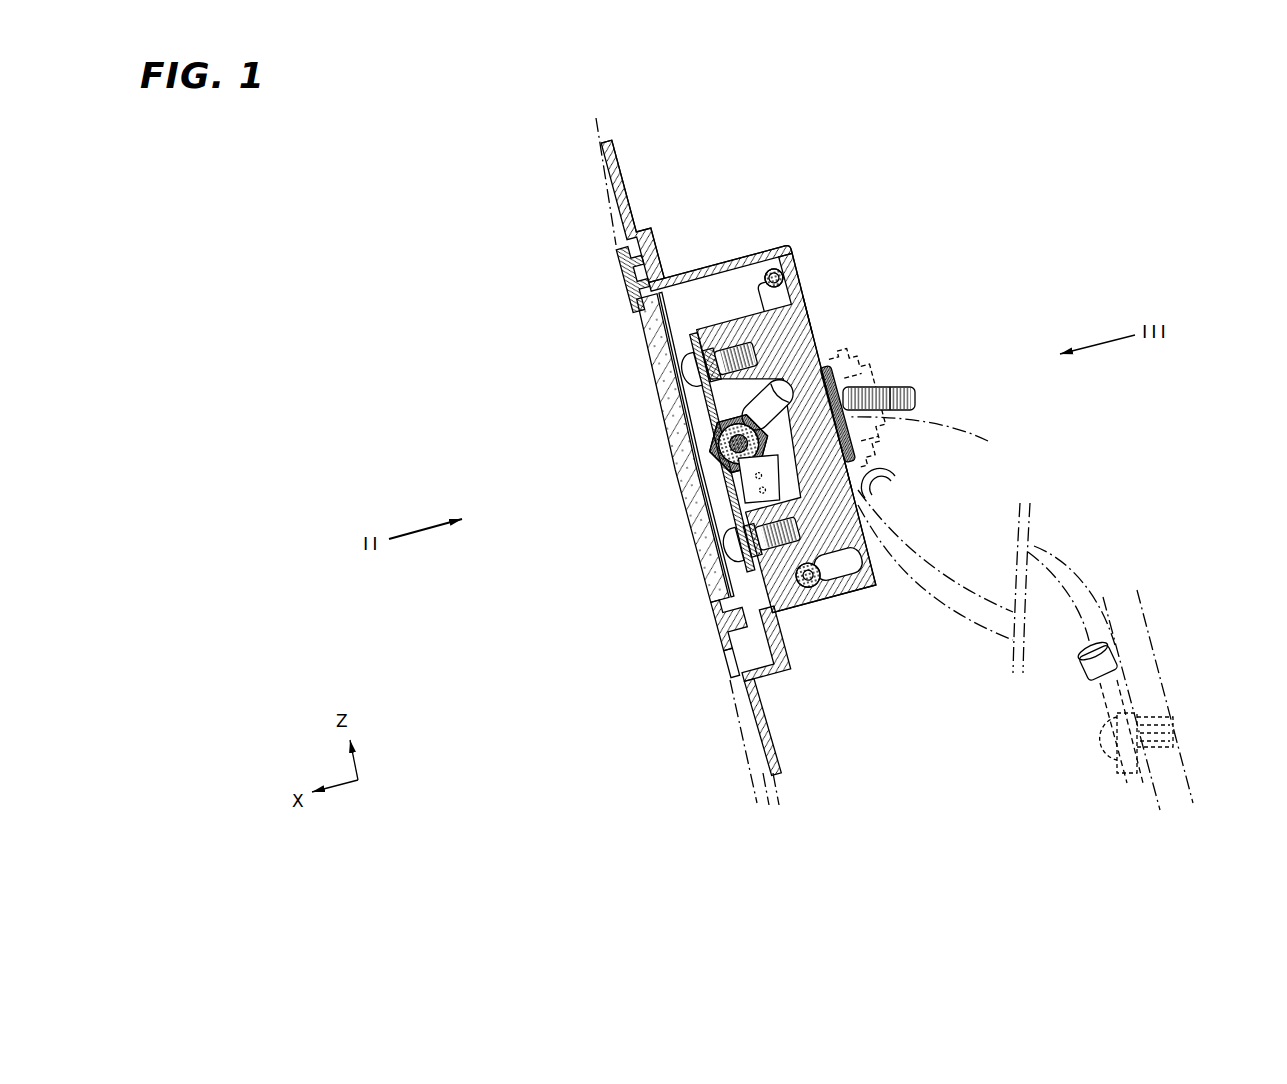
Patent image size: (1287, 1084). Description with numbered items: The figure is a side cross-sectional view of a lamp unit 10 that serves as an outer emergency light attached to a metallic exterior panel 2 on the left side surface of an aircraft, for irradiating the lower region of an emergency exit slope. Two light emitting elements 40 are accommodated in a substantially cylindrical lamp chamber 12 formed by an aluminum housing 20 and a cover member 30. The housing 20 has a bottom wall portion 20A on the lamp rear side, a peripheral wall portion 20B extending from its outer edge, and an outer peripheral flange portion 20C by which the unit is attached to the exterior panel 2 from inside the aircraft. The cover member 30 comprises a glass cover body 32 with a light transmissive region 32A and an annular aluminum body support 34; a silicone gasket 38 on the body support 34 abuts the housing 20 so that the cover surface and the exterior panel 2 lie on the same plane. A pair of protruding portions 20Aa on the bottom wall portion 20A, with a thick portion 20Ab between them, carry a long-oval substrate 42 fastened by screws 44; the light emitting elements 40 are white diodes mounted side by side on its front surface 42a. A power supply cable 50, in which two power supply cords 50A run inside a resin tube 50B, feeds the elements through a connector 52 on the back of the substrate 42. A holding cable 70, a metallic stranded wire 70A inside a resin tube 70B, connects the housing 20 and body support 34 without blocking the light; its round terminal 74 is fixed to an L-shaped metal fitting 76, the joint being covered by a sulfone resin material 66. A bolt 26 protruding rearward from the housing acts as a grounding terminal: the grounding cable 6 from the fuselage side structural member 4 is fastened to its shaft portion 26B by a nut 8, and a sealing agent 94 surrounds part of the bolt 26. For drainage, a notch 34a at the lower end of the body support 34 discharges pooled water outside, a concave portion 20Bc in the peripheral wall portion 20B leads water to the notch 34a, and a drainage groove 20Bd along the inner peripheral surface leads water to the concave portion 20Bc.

The exterior panel 2 is at (743, 737).
The fuselage side structural member 4 is at (1150, 624).
The grounding cable 6 is at (1068, 574).
The nut 8 is at (925, 435).
The lamp unit 10 is at (478, 309).
The lamp chamber 12 is at (728, 310).
The housing 20 is at (793, 242).
The bottom wall portion 20A is at (858, 550).
The protruding portions 20Aa is at (812, 320).
The thick portion 20Ab is at (851, 437).
The peripheral wall portion 20B is at (740, 262).
The concave portion 20Bc is at (767, 637).
The drainage groove 20Bd is at (771, 680).
The outer peripheral flange portion 20C is at (625, 186).
The bolt 26 is at (920, 398).
The shaft portion 26B is at (902, 385).
The cover member 30 is at (578, 587).
The cover body 32 is at (689, 551).
The light transmissive region 32A is at (690, 482).
The body support 34 is at (716, 628).
The notch 34a is at (731, 660).
The gasket 38 is at (633, 258).
The light emitting elements 40 is at (708, 455).
The substrate 42 is at (693, 338).
The front surface 42a is at (722, 502).
The screw 44 is at (684, 368).
The power supply cable 50 is at (866, 596).
The power supply cords 50A is at (809, 587).
The resin tube 50B is at (838, 580).
The connector 52 is at (779, 478).
The resin material 66 is at (822, 368).
The holding cable 70 is at (756, 298).
The stranded wire 70A is at (784, 272).
The resin tube 70B is at (790, 295).
The round terminal 74 is at (713, 448).
The L-shaped metal fitting 76 is at (712, 426).
The sealing agent 94 is at (858, 383).